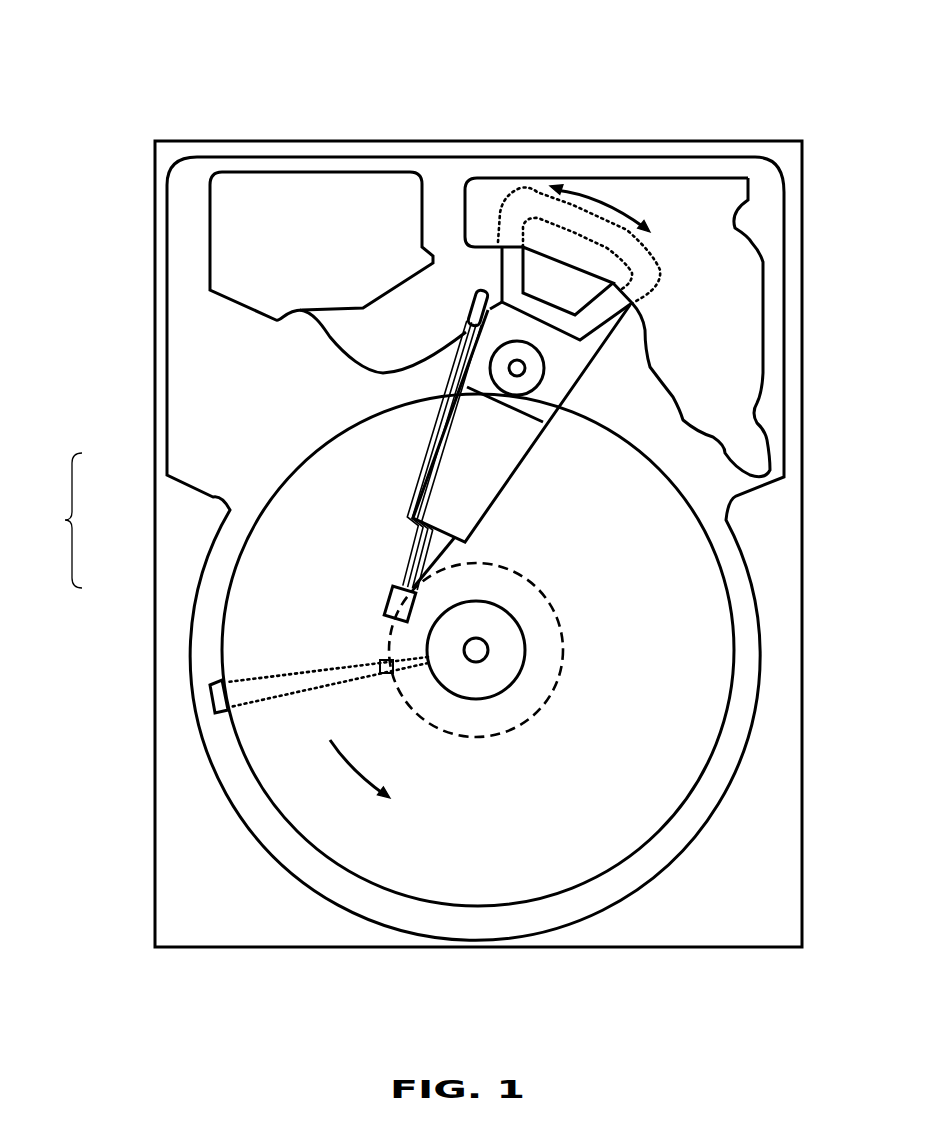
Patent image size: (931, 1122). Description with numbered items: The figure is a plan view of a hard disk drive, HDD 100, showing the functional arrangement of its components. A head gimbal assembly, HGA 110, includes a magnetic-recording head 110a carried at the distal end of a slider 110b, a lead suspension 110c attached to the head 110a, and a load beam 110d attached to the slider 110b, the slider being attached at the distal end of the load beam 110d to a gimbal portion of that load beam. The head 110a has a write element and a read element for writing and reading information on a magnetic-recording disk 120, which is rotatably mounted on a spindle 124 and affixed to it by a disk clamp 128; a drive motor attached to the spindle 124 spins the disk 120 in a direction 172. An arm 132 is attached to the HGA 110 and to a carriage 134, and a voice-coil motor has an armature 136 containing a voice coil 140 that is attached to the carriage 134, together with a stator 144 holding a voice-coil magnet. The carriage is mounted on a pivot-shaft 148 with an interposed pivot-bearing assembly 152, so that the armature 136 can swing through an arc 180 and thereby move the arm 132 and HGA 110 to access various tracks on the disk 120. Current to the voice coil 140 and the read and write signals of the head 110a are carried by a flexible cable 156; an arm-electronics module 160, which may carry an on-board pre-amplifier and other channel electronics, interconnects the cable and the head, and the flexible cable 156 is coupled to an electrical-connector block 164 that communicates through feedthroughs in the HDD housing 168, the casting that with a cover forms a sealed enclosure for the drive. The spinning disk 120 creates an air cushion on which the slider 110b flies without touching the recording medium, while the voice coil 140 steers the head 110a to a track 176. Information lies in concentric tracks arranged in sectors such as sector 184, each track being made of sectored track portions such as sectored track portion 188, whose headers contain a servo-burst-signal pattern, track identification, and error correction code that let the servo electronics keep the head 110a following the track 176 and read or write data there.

The HDD 100 is at (118, 70).
The head gimbal assembly 110 is at (249, 471).
The magnetic-recording head 110a is at (385, 593).
The slider 110b is at (390, 583).
The lead suspension 110c is at (410, 538).
The load beam 110d is at (407, 522).
The magnetic-recording disk 120 is at (662, 600).
The spindle 124 is at (480, 648).
The disk clamp 128 is at (503, 667).
The arm 132 is at (470, 485).
The carriage 134 is at (535, 400).
The armature 136 is at (496, 266).
The voice coil 140 is at (513, 265).
The stator 144 is at (733, 268).
The pivot-shaft 148 is at (543, 368).
The pivot-bearing assembly 152 is at (530, 380).
The flexible cable 156 is at (340, 343).
The arm-electronics module 160 is at (470, 335).
The electrical-connector block 164 is at (232, 245).
The HDD housing 168 is at (780, 152).
The direction 172 is at (365, 777).
The track 176 is at (557, 608).
The arc 180 is at (597, 195).
The sector 184 is at (210, 700).
The sectored track portion 188 is at (380, 665).